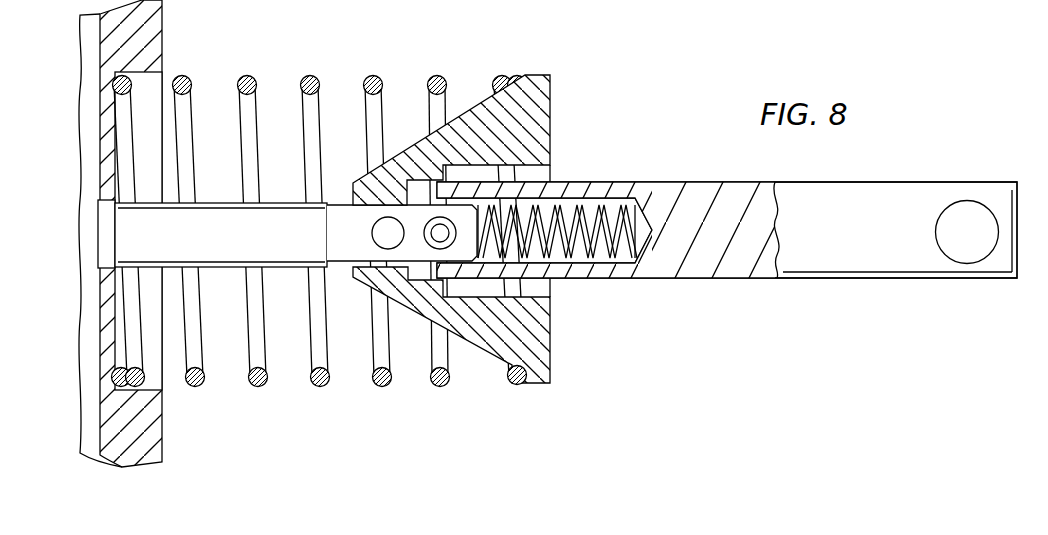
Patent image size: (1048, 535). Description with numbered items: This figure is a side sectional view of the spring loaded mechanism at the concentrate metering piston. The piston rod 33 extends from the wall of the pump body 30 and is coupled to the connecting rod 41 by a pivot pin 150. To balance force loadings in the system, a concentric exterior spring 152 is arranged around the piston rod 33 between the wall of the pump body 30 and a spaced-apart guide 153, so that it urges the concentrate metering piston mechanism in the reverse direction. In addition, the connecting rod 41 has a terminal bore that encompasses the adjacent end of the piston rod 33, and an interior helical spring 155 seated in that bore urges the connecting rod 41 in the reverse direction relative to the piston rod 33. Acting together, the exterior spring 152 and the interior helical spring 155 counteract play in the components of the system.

The pump body 30 is at (162, 432).
The piston rod 33 is at (271, 205).
The connecting rod 41 is at (799, 279).
The pivot pin 150 is at (451, 239).
The concentric exterior spring 152 is at (371, 78).
The guide 153 is at (487, 352).
The interior helical spring 155 is at (593, 205).